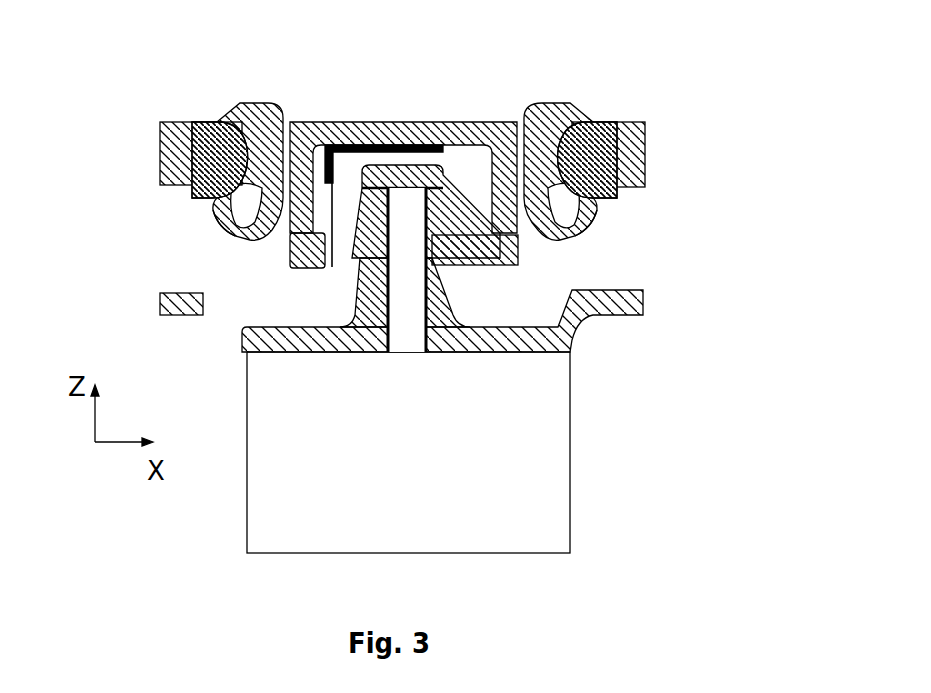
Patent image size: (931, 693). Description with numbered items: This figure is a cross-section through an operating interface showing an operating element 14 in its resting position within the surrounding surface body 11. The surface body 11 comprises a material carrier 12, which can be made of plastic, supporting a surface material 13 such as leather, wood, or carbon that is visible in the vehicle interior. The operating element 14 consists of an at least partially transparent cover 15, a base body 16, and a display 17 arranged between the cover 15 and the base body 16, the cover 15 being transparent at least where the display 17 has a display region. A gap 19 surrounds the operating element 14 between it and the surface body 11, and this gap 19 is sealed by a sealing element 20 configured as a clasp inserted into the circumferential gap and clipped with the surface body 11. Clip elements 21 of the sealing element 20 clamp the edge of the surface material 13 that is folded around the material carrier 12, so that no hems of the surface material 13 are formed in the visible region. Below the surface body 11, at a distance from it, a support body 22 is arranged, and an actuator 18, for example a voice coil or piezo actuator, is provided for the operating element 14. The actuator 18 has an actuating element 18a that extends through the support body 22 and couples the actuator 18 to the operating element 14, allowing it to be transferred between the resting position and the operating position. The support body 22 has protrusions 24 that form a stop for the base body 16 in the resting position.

The surface body 11 is at (403, 137).
The material carrier 12 is at (193, 157).
The surface material 13 is at (205, 127).
The operating element 14 is at (510, 158).
The cover 15 is at (343, 127).
The base body 16 is at (517, 247).
The display 17 is at (403, 147).
The actuator 18 is at (557, 442).
The actuating element 18a is at (407, 308).
The gap 19 is at (444, 298).
The sealing element 20 is at (255, 140).
The clip elements 21 is at (215, 228).
The support body 22 is at (645, 302).
The protrusions 24 is at (370, 278).